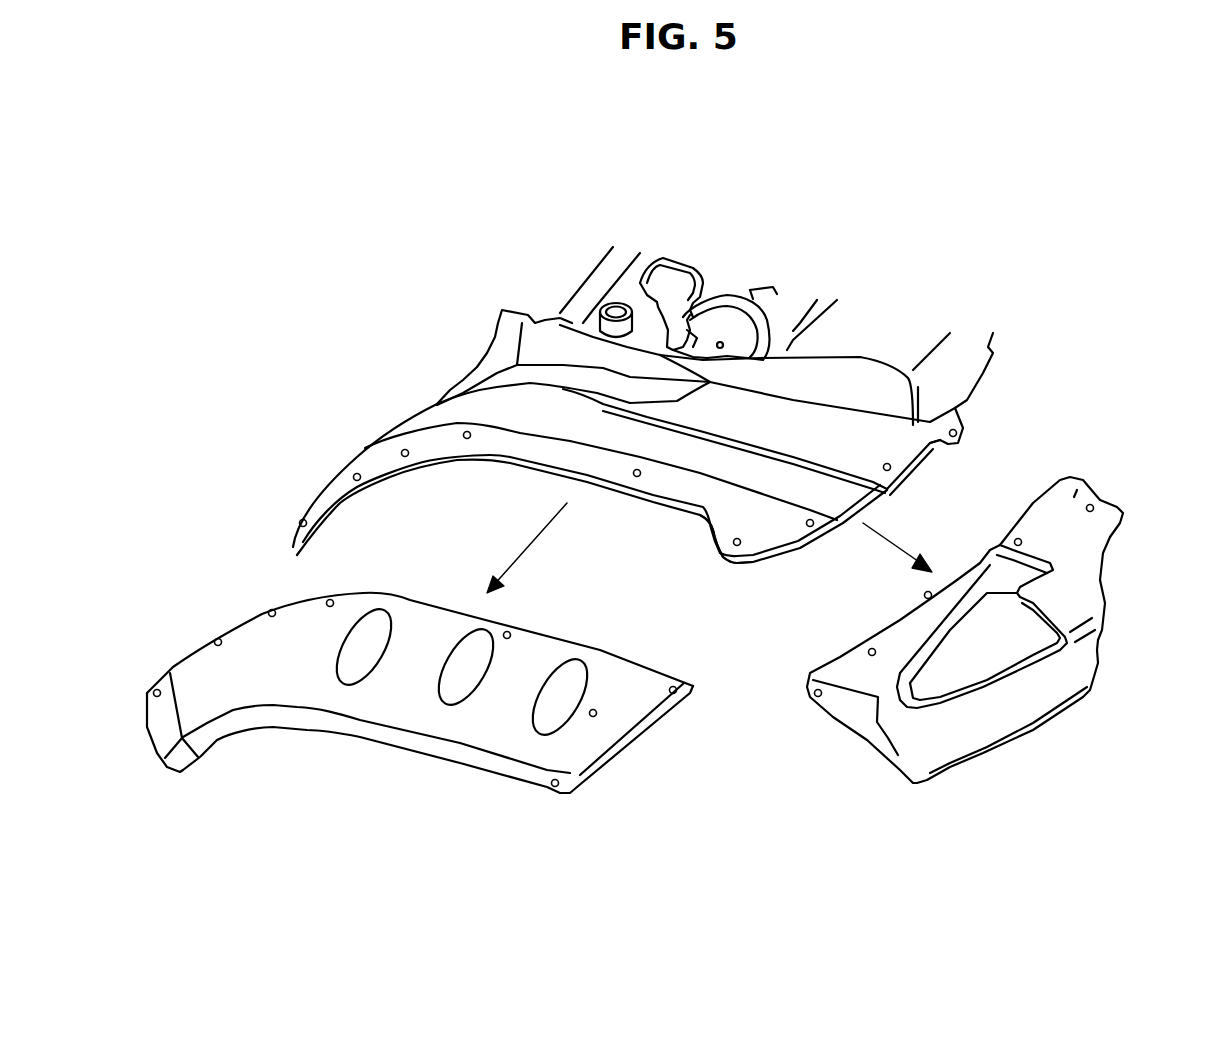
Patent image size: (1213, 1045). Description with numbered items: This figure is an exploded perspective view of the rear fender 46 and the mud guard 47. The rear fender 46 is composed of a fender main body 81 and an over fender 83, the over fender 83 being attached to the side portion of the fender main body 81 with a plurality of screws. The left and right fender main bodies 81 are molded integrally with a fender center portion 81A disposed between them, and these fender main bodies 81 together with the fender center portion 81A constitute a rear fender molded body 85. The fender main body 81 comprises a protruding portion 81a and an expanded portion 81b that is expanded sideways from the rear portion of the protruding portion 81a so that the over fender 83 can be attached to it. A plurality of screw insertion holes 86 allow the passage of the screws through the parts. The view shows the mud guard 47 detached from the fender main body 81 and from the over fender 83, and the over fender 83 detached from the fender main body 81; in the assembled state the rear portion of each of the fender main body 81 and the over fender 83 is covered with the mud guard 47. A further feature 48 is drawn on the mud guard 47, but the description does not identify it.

The fender main body 81 is at (443, 420).
The protruding portion 81a is at (533, 450).
The expanded portion 81b is at (738, 567).
The fender center portion 81A is at (900, 350).
The rear fender molded body 85 is at (490, 321).
The screw insertion holes 86 is at (403, 453).
The over fender 83 is at (373, 750).
The rear fender 46 is at (450, 797).
The mud guard 47 is at (1053, 723).
The louver opening 48 is at (973, 697).